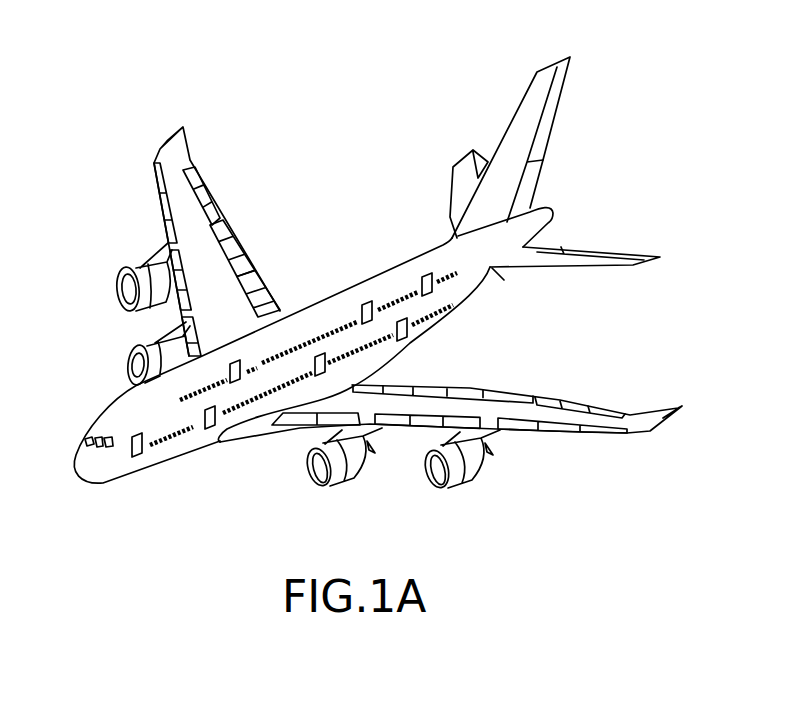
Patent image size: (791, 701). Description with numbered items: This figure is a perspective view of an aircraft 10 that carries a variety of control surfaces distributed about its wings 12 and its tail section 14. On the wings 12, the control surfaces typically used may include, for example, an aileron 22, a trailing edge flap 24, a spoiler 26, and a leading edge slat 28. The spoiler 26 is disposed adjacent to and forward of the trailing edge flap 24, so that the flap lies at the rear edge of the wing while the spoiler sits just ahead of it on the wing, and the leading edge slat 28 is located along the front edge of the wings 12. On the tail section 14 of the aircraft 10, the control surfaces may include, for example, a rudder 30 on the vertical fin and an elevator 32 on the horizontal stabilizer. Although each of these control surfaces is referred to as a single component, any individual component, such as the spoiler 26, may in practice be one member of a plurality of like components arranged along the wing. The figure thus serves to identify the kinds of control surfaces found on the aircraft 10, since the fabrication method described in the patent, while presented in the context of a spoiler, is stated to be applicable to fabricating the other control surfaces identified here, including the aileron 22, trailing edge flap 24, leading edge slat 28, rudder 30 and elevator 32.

The aircraft 10 is at (88, 155).
The wings 12 is at (375, 279).
The tail section 14 is at (539, 132).
The aileron 22 is at (197, 173).
The trailing edge flap 24 is at (260, 280).
The spoiler 26 is at (233, 257).
The leading edge slat 28 is at (167, 229).
The rudder 30 is at (546, 120).
The elevator 32 is at (598, 248).